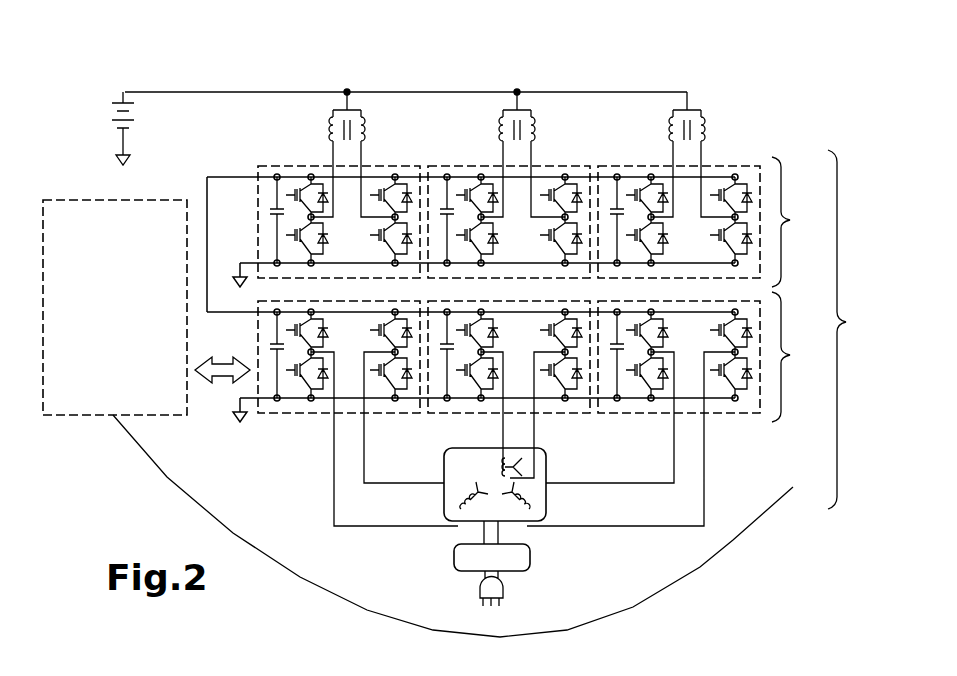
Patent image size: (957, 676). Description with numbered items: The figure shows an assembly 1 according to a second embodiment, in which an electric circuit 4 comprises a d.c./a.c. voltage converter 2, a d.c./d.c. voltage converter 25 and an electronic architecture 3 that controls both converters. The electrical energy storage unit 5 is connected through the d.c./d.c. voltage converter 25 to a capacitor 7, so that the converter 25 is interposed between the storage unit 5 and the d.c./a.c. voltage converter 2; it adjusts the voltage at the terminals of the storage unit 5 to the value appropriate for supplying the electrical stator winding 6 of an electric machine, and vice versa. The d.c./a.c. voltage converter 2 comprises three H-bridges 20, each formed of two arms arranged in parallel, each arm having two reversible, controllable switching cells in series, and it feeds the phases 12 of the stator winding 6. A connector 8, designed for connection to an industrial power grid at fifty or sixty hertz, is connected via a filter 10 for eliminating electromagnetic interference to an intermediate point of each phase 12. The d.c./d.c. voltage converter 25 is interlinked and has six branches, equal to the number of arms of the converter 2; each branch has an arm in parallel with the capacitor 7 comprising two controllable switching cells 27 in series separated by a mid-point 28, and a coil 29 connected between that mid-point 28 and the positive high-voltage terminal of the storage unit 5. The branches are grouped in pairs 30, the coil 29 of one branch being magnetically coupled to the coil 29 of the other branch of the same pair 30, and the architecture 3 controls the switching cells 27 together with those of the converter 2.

The assembly 1 is at (849, 329).
The d.c./a.c. voltage converter 2 is at (795, 357).
The electronic architecture 3 is at (465, 526).
The electric circuit 4 is at (211, 124).
The electrical energy storage unit 5 is at (121, 100).
The electrical stator winding 6 is at (496, 448).
The capacitor 7 is at (270, 212).
The connector 8 is at (503, 587).
The filter 10 is at (530, 551).
The phase 12 is at (533, 463).
The H-bridge 20 is at (283, 416).
The d.c./d.c. voltage converter 25 is at (801, 222).
The switching cell 27 is at (340, 186).
The mid-point 28 is at (312, 218).
The coil 29 is at (370, 130).
The pair 30 is at (288, 166).